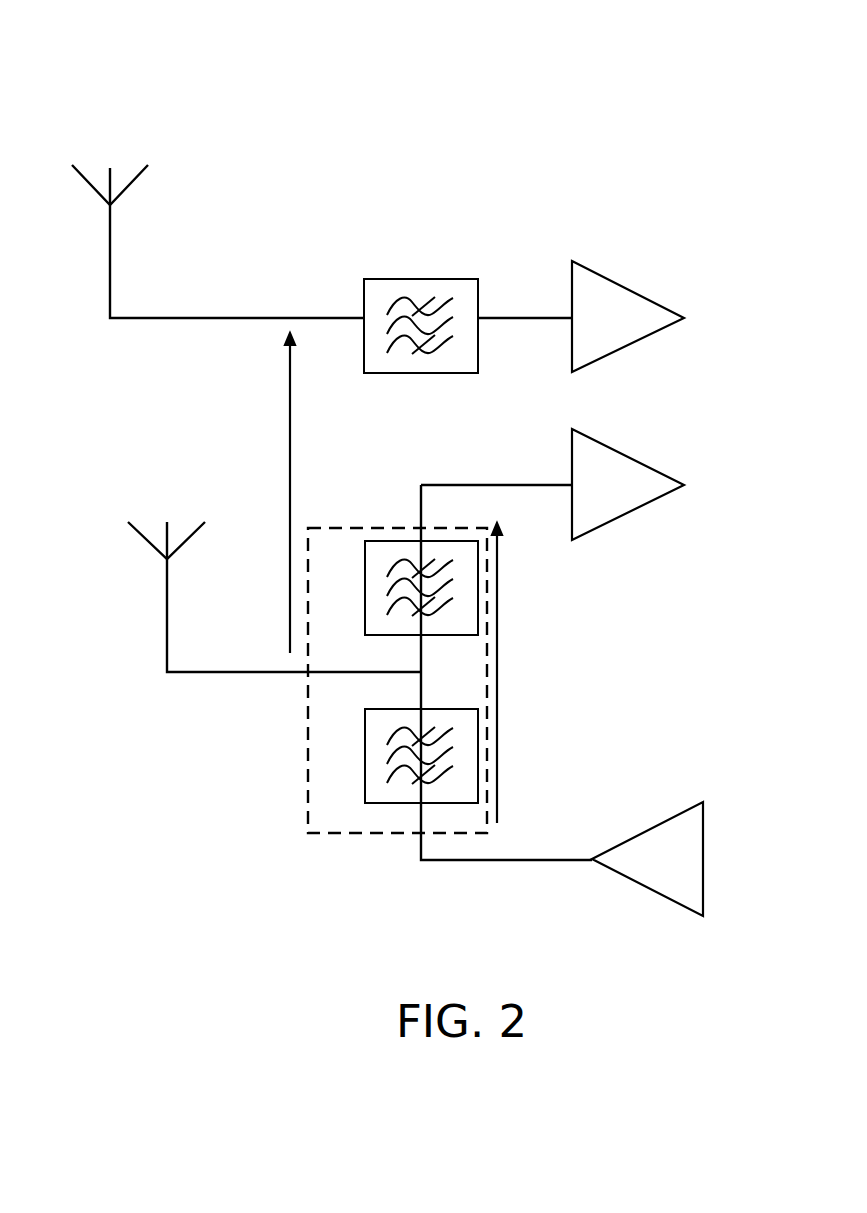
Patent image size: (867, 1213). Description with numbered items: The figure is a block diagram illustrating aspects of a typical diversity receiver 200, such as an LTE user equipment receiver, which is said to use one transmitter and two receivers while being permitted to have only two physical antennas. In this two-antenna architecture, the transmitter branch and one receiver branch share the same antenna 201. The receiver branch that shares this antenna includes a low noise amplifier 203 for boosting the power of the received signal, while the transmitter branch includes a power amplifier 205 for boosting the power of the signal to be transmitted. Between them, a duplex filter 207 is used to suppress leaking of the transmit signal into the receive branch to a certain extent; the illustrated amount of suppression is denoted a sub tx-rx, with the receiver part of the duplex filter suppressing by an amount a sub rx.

The diversity receiver 200 is at (243, 64).
The antenna 201 is at (165, 617).
The low noise amplifier 203 is at (617, 448).
The power amplifier 205 is at (648, 828).
The duplex filter 207 is at (308, 778).